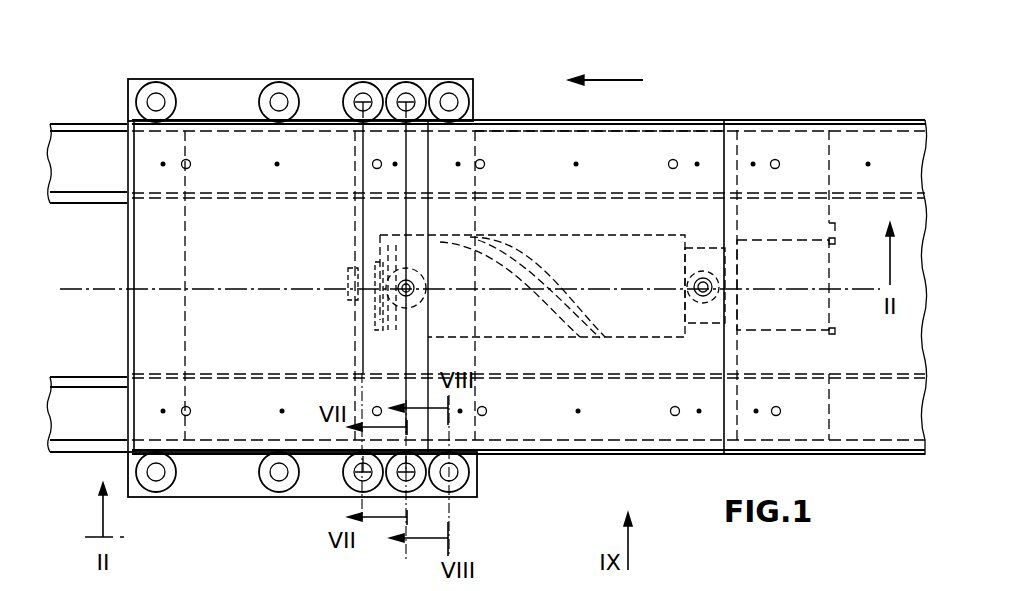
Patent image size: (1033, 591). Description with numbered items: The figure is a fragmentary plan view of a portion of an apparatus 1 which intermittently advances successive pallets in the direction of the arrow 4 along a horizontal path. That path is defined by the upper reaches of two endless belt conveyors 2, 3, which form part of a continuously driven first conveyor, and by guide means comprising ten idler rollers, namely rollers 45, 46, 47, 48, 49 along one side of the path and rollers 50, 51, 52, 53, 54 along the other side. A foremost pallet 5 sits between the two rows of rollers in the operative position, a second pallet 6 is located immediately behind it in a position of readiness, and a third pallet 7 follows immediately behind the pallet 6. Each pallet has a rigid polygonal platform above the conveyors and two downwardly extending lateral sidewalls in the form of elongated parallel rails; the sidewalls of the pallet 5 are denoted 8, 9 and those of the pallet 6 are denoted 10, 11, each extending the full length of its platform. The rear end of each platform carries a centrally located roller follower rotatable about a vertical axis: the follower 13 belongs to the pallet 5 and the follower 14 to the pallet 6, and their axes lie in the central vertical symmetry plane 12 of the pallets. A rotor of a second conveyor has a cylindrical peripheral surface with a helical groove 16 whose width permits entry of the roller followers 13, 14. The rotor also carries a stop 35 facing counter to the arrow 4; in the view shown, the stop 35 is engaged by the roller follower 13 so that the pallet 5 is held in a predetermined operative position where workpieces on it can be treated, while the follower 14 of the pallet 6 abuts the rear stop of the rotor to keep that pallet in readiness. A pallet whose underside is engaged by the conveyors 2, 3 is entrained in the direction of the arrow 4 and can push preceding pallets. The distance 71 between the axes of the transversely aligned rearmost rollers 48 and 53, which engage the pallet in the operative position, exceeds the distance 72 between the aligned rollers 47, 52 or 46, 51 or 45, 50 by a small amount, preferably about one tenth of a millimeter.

The apparatus 1 is at (103, 135).
The endless belt conveyor 2 is at (68, 140).
The endless belt conveyor 3 is at (75, 392).
The arrow 4 is at (620, 80).
The foremost pallet 5 is at (231, 178).
The second pallet 6 is at (530, 178).
The third pallet 7 is at (800, 176).
The sidewall 8 is at (200, 121).
The sidewall 9 is at (222, 497).
The sidewall 10 is at (547, 119).
The sidewall 11 is at (590, 454).
The central vertical symmetry plane 12 is at (85, 289).
The roller follower 13 is at (395, 272).
The roller follower 14 is at (703, 270).
The helical groove 16 is at (600, 337).
The second stop 35 is at (385, 324).
The idler roller 45 is at (157, 490).
The idler roller 46 is at (278, 490).
The idler roller 47 is at (356, 480).
The idler roller 48 is at (412, 488).
The idler roller 49 is at (462, 477).
The idler roller 50 is at (150, 81).
The idler roller 51 is at (276, 82).
The idler roller 52 is at (356, 83).
The idler roller 53 is at (400, 83).
The idler roller 54 is at (446, 83).
The distance 71 is at (413, 218).
The distance 72 is at (355, 218).